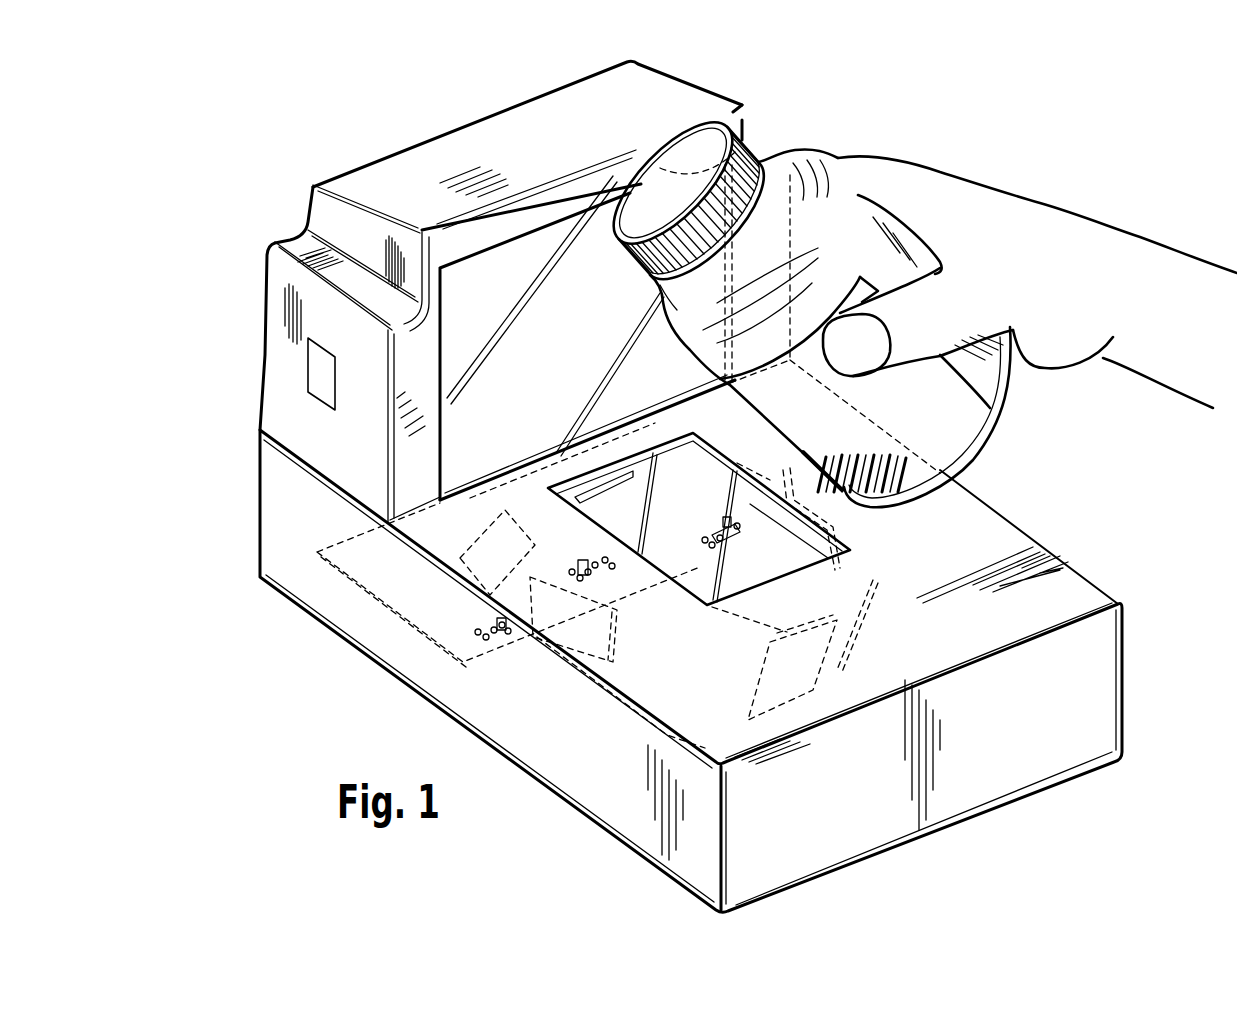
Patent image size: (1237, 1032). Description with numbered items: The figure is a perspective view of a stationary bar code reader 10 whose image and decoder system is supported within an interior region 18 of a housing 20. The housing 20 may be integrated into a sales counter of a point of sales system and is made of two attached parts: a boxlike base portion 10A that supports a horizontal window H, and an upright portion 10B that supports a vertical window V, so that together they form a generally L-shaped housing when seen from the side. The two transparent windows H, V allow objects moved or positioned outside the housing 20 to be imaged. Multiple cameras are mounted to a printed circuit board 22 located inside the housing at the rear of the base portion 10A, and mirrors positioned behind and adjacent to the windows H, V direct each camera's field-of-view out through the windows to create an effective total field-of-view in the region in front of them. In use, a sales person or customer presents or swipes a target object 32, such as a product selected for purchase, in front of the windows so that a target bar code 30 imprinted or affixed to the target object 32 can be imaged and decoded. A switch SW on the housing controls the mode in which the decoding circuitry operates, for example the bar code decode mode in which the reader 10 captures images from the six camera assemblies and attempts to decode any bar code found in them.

The stationary bar code reader 10 is at (358, 106).
The base portion 10A is at (633, 802).
The upright portion 10B is at (343, 445).
The interior region 18 is at (523, 270).
The housing 20 is at (382, 172).
The printed circuit board 22 is at (418, 603).
The target bar code 30 is at (893, 463).
The target object 32 is at (834, 228).
The switch SW is at (317, 363).
The vertical window V is at (520, 410).
The horizontal window H is at (668, 540).